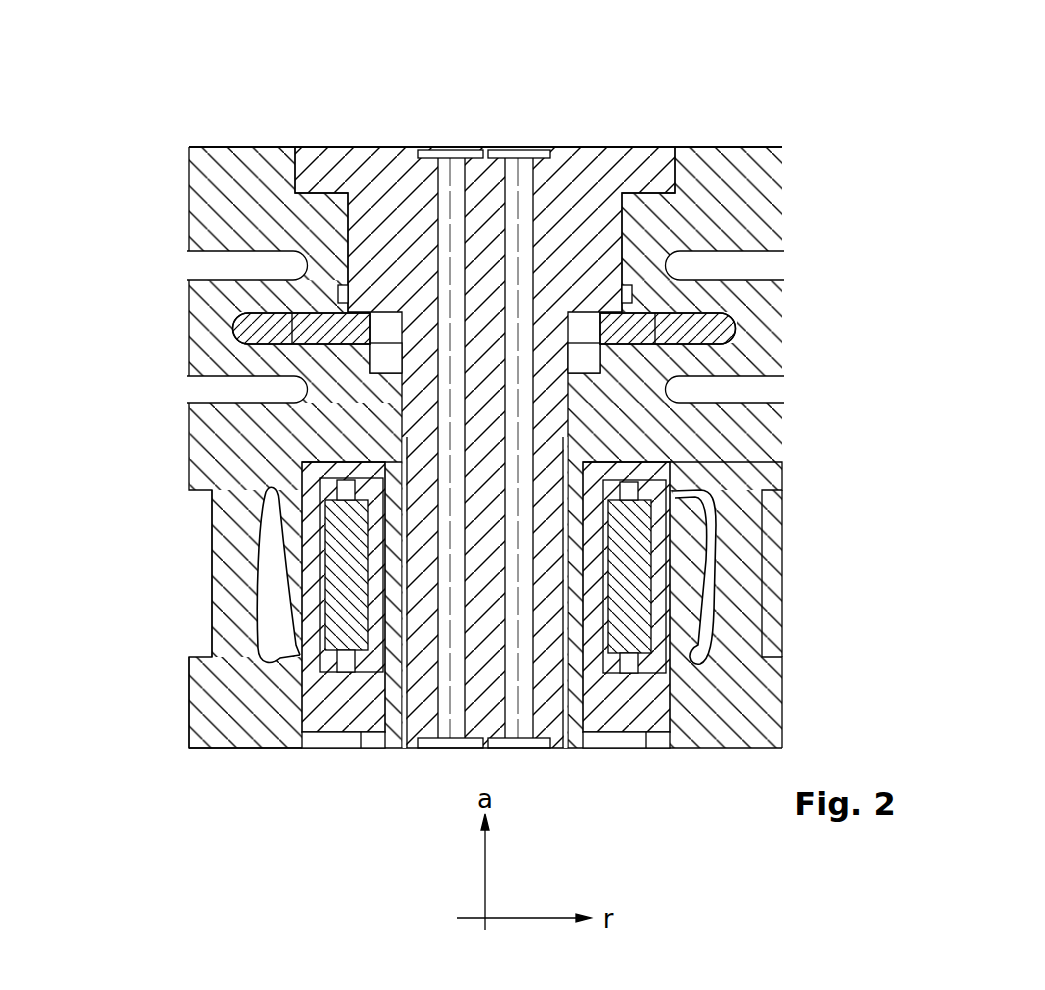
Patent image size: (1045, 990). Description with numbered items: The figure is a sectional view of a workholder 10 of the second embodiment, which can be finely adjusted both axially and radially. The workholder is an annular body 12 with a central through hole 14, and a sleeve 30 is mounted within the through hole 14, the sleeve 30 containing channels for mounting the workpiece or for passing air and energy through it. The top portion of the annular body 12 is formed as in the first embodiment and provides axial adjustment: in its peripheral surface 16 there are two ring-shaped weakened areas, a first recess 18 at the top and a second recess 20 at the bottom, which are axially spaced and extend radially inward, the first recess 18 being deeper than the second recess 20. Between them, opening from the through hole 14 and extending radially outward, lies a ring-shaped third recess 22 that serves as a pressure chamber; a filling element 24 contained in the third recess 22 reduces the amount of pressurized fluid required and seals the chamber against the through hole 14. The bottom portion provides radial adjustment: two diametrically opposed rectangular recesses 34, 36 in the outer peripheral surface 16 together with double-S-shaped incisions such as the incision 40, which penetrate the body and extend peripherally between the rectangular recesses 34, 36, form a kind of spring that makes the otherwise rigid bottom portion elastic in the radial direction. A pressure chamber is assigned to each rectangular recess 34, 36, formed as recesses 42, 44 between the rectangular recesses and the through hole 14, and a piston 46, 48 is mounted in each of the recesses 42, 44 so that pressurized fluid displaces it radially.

The bearing arrangement 10 is at (177, 95).
The annular body 12 is at (765, 160).
The central through hole 14 is at (636, 126).
The peripheral surface 16 is at (181, 729).
The first recess 18 is at (192, 262).
The second recess 20 is at (192, 398).
The third recess 22 is at (738, 334).
The filling element 24 is at (258, 330).
The sleeve 30 is at (370, 180).
The rectangular recess 34 is at (186, 602).
The rectangular recess 36 is at (793, 596).
The double-S-shaped incision 40 is at (725, 545).
The recess 42 is at (347, 662).
The recess 44 is at (627, 665).
The piston 46 is at (322, 662).
The piston 48 is at (677, 670).